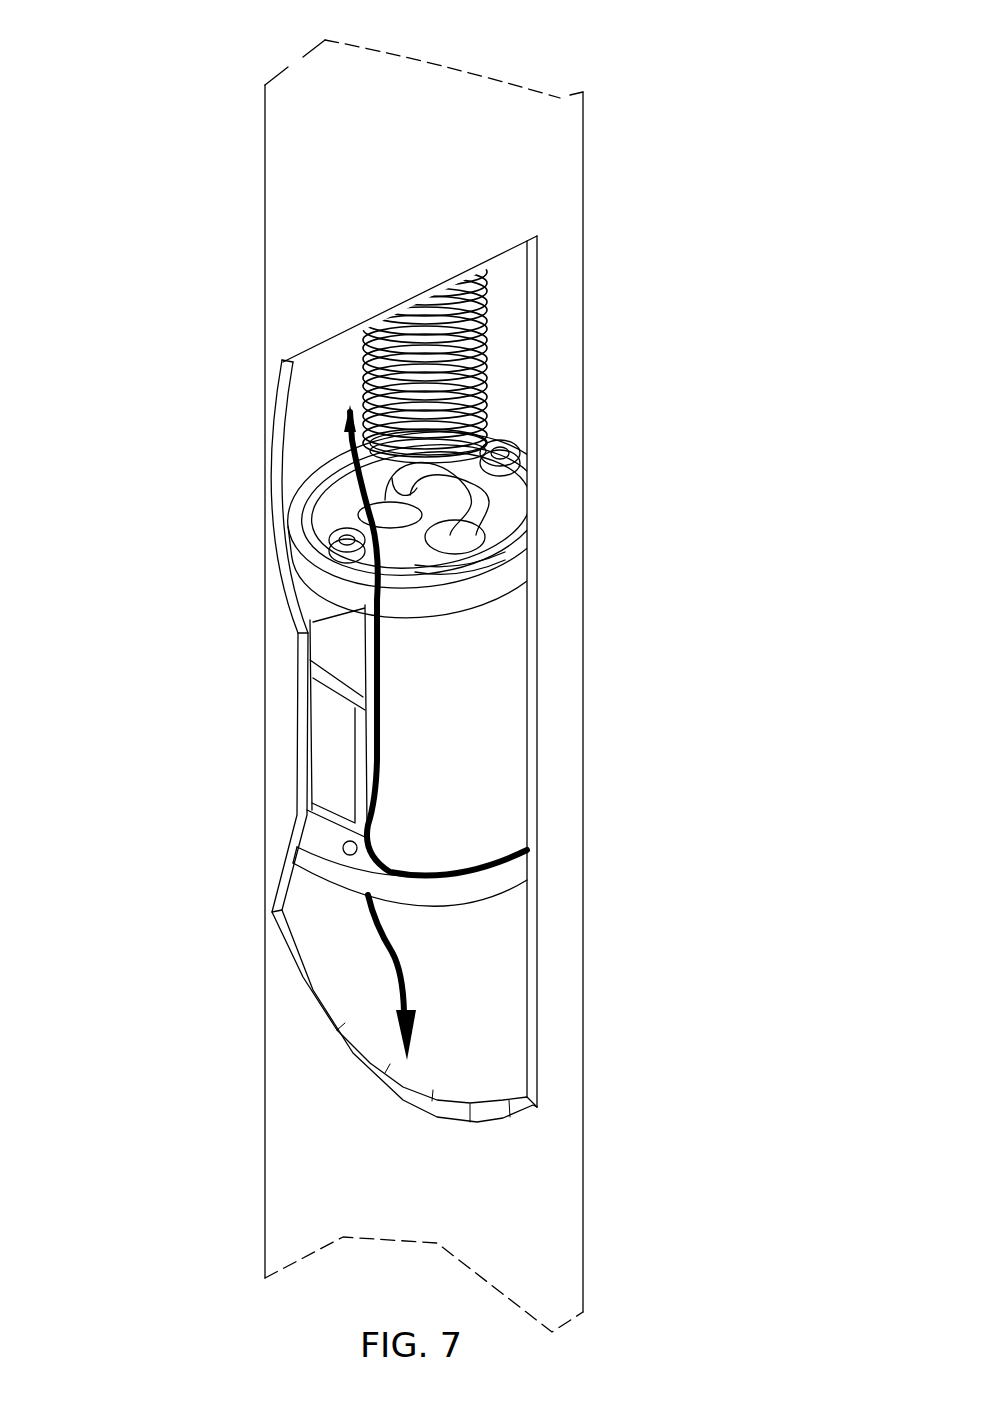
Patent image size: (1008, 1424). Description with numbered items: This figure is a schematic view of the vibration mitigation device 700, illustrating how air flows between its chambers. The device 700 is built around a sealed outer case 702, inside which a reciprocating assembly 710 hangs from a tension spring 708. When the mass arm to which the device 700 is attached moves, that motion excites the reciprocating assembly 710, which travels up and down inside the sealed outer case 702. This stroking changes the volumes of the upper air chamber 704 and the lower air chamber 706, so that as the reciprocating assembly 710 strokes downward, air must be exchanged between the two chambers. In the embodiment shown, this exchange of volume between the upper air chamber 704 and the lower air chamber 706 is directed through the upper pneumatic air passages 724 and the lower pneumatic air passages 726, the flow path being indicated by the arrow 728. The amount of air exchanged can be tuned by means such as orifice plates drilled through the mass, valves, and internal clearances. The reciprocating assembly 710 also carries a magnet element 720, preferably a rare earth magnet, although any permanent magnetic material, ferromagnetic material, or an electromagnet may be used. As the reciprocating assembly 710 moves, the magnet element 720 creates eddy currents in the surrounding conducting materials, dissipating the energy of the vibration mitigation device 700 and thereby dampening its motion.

The vibration mitigation device 700 is at (578, 53).
The sealed outer case 702 is at (560, 200).
The upper air chamber 704 is at (317, 400).
The lower air chamber 706 is at (337, 970).
The tension spring 708 is at (487, 335).
The reciprocating assembly 710 is at (503, 585).
The magnet element 720 is at (337, 763).
The upper pneumatic air passages 724 is at (380, 547).
The lower pneumatic air passages 726 is at (400, 860).
The arrow 728 is at (390, 765).